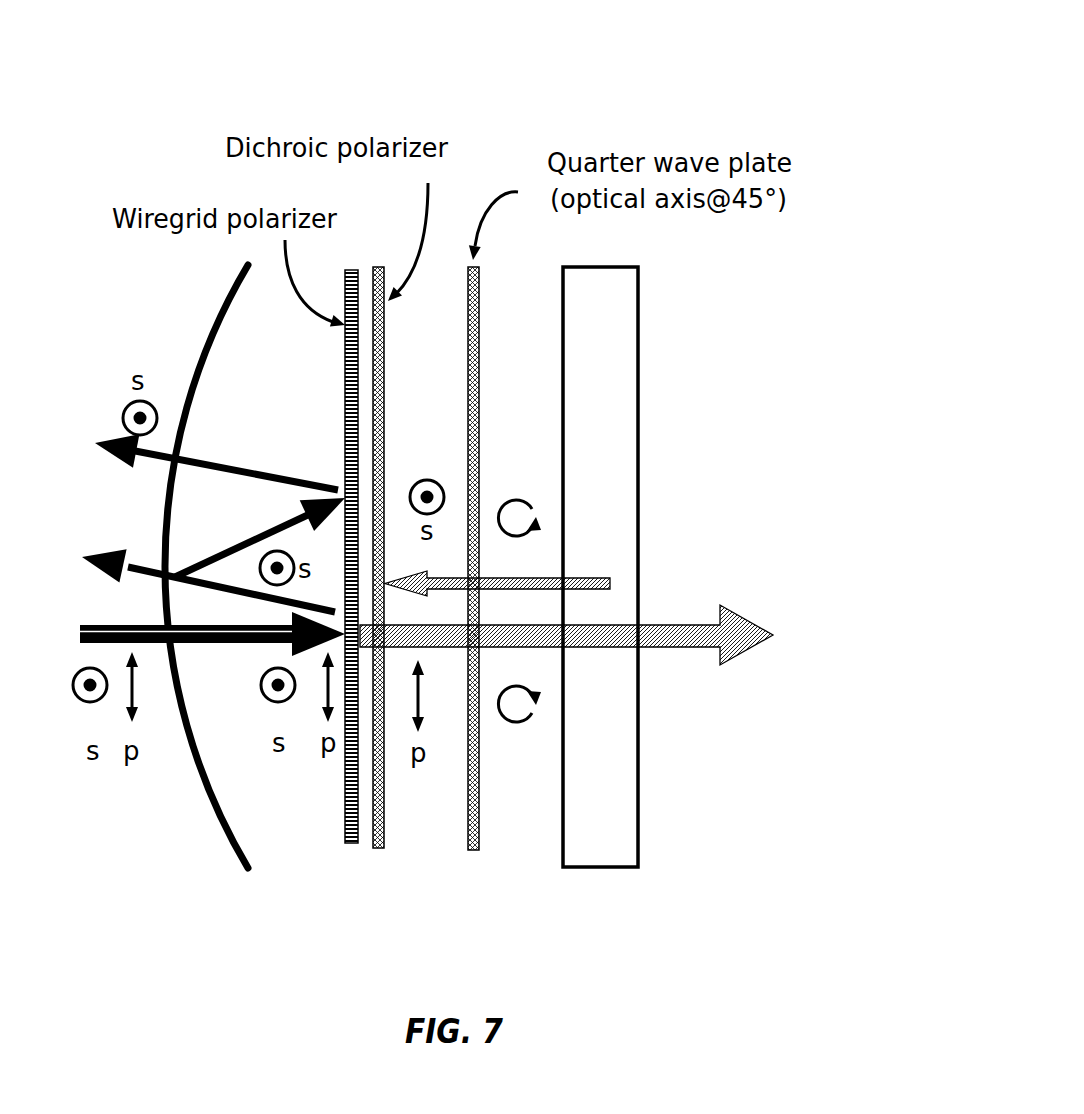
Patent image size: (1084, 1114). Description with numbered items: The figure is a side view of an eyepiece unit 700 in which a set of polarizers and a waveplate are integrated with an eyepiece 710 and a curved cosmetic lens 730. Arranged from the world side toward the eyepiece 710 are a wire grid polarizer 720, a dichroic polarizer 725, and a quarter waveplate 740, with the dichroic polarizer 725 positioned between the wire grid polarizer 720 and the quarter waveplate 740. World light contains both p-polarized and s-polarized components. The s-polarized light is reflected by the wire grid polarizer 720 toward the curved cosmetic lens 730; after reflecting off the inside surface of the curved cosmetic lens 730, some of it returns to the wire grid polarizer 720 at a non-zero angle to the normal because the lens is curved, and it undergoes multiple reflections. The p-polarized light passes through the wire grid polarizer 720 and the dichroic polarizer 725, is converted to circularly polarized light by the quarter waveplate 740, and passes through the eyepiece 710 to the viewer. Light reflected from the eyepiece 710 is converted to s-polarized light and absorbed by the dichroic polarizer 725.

The eyepiece unit 700 is at (690, 55).
The eyepiece 710 is at (638, 783).
The wire grid polarizer 720 is at (345, 395).
The dichroic polarizer 725 is at (384, 357).
The curved cosmetic lens 730 is at (226, 304).
The quarter waveplate 740 is at (479, 378).